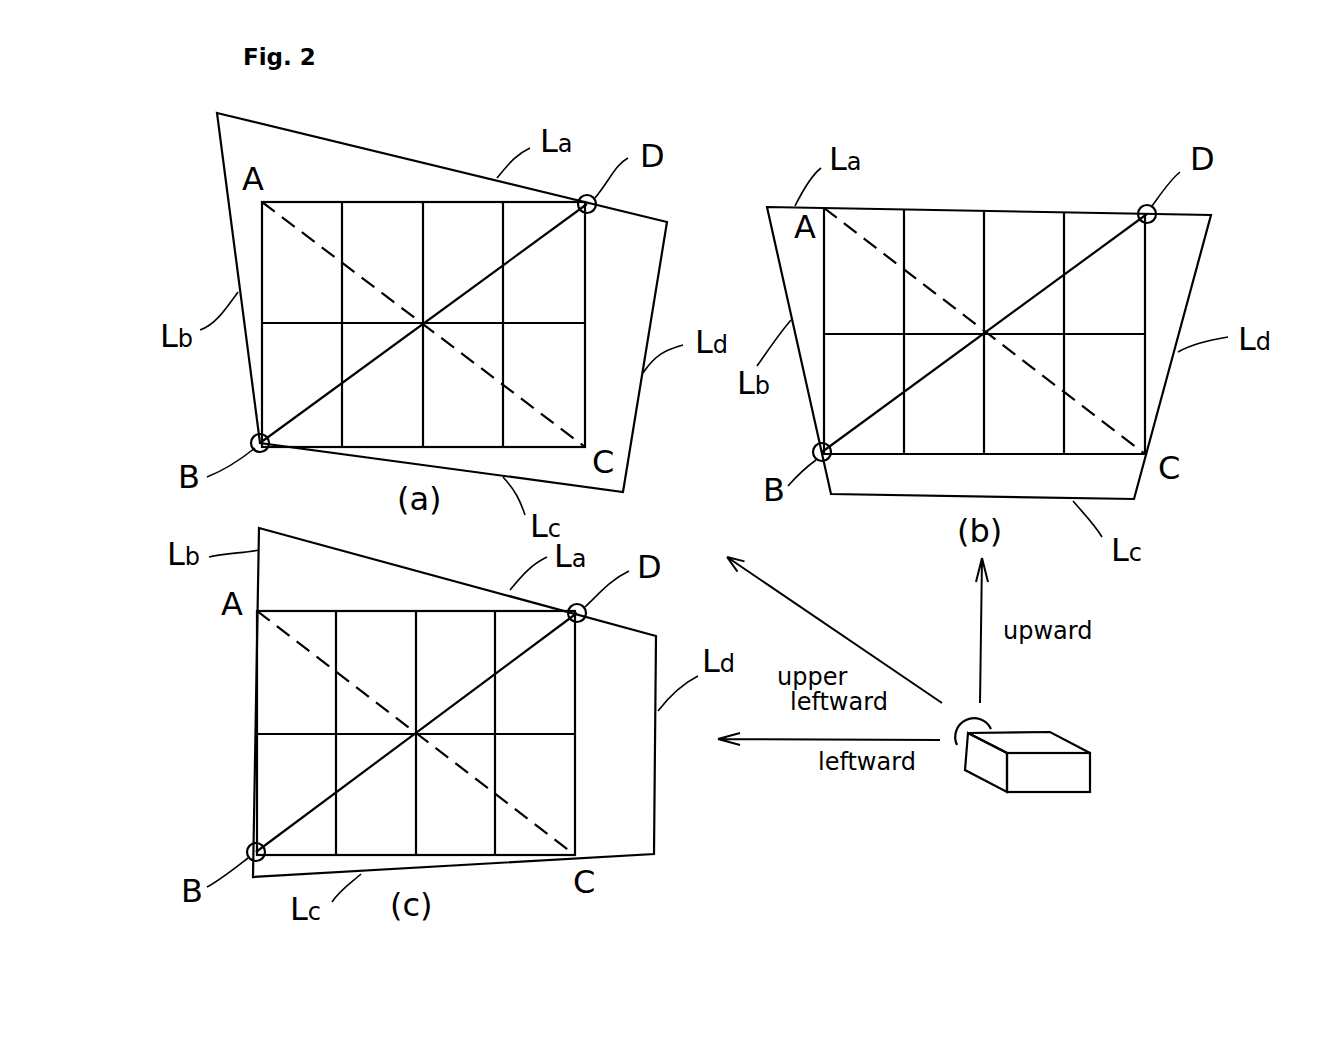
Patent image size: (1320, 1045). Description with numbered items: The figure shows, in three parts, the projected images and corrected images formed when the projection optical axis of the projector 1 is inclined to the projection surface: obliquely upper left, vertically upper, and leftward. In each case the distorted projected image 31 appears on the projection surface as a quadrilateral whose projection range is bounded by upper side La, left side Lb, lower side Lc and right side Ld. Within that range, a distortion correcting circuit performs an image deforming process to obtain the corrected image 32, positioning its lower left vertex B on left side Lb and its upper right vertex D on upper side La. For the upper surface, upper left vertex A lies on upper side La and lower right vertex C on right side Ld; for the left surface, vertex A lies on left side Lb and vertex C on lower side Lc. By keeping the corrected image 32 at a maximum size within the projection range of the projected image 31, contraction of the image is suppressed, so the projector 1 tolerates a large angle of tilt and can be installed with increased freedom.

The projector 1 is at (1070, 748).
The projected image 31 is at (357, 168).
The corrected image 32 is at (572, 300).